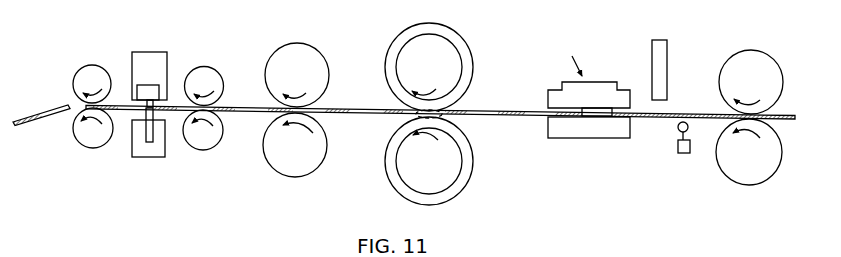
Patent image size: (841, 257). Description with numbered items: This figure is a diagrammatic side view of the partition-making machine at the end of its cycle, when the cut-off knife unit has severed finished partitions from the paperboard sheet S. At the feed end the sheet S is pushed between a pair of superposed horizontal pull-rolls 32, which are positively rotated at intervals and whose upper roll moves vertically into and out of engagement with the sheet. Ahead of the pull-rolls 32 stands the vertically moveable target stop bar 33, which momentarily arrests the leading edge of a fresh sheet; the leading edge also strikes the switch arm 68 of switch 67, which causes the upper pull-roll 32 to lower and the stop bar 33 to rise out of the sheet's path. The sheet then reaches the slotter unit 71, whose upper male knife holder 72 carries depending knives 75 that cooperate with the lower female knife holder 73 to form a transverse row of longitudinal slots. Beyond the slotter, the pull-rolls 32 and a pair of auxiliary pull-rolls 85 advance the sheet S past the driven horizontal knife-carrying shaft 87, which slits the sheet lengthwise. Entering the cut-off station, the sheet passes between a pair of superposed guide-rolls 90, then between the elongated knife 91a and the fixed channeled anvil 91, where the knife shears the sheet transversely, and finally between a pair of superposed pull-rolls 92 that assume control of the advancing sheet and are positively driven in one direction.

The paperboard sheet S is at (476, 118).
The pull-rolls 92 is at (77, 75).
The channeled anvil 91 is at (146, 91).
The elongated knife 91a is at (151, 111).
The guide-rolls 90 is at (203, 75).
The auxiliary pull-rolls 85 is at (280, 53).
The knife-carrying shaft 87 is at (396, 50).
The upper male knife holder 72 is at (575, 85).
The slotter unit 71 is at (576, 56).
The knives 75 is at (583, 110).
The lower female knife holder 73 is at (573, 133).
The target stop bar 33 is at (658, 43).
The switch arm 68 is at (680, 130).
The switch 67 is at (682, 155).
The pull-rolls 32 is at (742, 62).